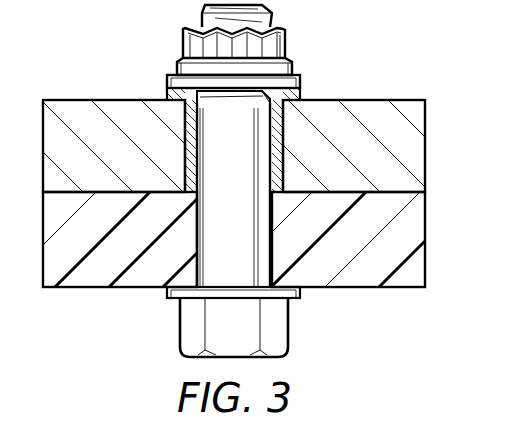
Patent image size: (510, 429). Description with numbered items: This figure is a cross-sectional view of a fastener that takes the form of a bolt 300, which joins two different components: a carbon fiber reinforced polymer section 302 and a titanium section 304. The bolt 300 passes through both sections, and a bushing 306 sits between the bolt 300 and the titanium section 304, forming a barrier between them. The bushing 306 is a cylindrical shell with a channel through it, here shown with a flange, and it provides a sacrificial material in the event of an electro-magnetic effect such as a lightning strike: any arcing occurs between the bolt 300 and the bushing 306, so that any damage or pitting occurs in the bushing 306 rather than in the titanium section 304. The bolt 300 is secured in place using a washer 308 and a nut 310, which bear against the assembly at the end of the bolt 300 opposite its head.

The bolt 300 is at (180, 322).
The carbon fiber reinforced polymer (CFRP) section 302 is at (359, 288).
The titanium section 304 is at (407, 99).
The bushing 306 is at (166, 92).
The washer 308 is at (302, 82).
The nut 310 is at (285, 44).